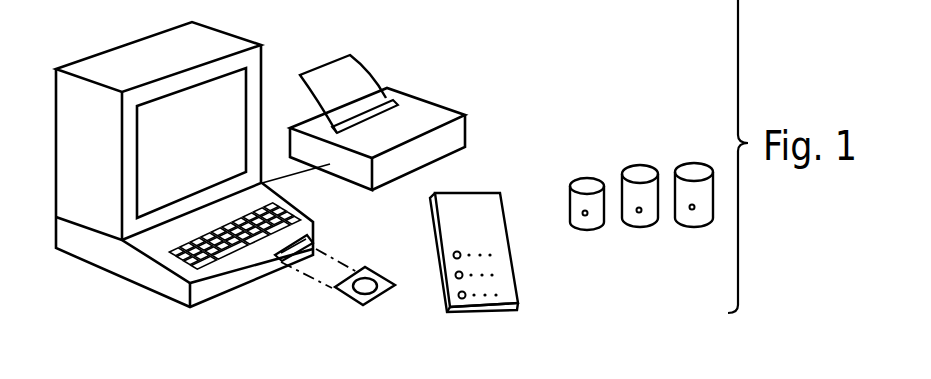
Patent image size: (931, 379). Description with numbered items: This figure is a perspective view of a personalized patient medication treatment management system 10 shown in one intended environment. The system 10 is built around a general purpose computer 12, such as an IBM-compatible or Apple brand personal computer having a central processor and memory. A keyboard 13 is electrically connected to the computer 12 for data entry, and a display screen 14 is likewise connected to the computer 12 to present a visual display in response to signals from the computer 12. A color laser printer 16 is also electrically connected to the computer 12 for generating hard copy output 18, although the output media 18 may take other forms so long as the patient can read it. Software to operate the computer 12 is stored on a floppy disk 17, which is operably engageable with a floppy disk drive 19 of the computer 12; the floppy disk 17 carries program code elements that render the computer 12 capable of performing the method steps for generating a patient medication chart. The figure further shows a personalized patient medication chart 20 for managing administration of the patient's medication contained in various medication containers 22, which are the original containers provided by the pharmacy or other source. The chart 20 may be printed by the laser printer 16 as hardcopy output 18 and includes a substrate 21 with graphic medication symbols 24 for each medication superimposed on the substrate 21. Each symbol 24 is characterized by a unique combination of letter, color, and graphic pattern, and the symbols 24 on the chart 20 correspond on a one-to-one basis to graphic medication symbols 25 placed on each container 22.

The patient medication treatment management system 10 is at (505, 50).
The general purpose computer 12 is at (112, 258).
The keyboard 13 is at (303, 213).
The display screen 14 is at (238, 90).
The color laser printer 16 is at (440, 112).
The floppy disk 17 is at (345, 287).
The hard copy output 18 is at (345, 73).
The floppy disk drive 19 is at (315, 248).
The personalized patient medication chart 20 is at (500, 240).
The substrate 21 is at (507, 293).
The medication containers 22 is at (593, 182).
The graphic medication symbols 24 is at (455, 278).
The graphic medication symbols 25 is at (642, 212).